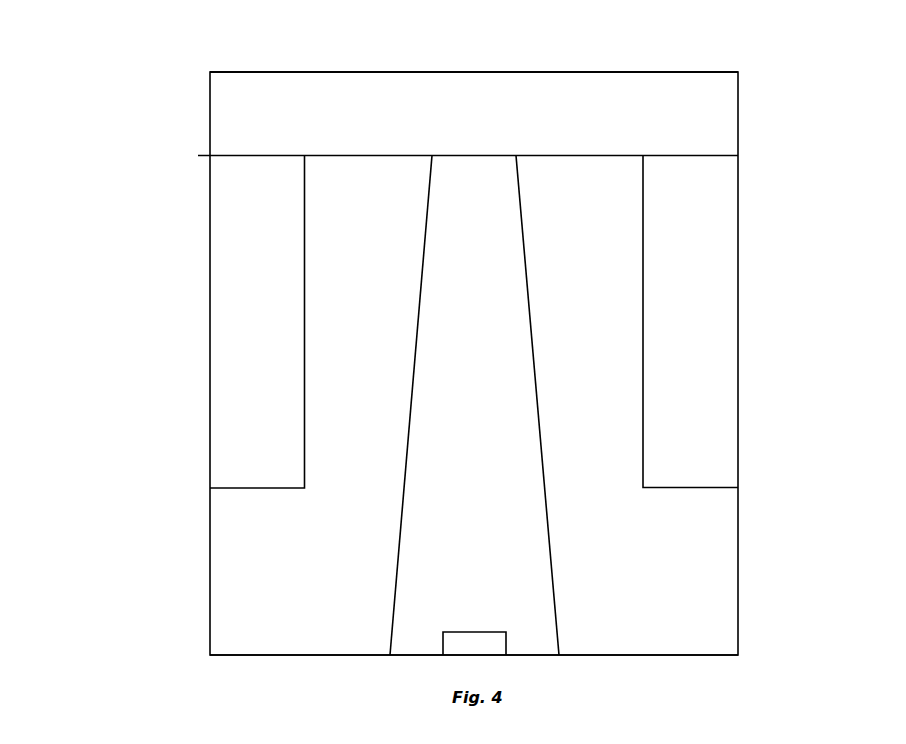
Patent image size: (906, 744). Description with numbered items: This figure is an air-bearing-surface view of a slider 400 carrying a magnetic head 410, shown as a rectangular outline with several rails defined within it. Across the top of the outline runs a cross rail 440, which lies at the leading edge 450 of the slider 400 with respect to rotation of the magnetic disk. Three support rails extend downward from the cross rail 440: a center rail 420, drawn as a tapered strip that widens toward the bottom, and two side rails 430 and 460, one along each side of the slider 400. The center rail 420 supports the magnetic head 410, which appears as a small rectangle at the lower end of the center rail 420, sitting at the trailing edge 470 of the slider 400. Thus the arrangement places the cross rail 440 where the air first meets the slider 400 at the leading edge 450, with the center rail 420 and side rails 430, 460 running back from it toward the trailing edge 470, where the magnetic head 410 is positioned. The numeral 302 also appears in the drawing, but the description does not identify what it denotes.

The slider 400 is at (72, 604).
The magnetic head 410 is at (463, 645).
The center rail 420 is at (443, 478).
The side rail 430 is at (252, 290).
The cross rail 440 is at (252, 104).
The leading edge 450 is at (282, 72).
The side rail 460 is at (717, 312).
The trailing edge 470 is at (642, 655).
The substrate 302 is at (725, 10).